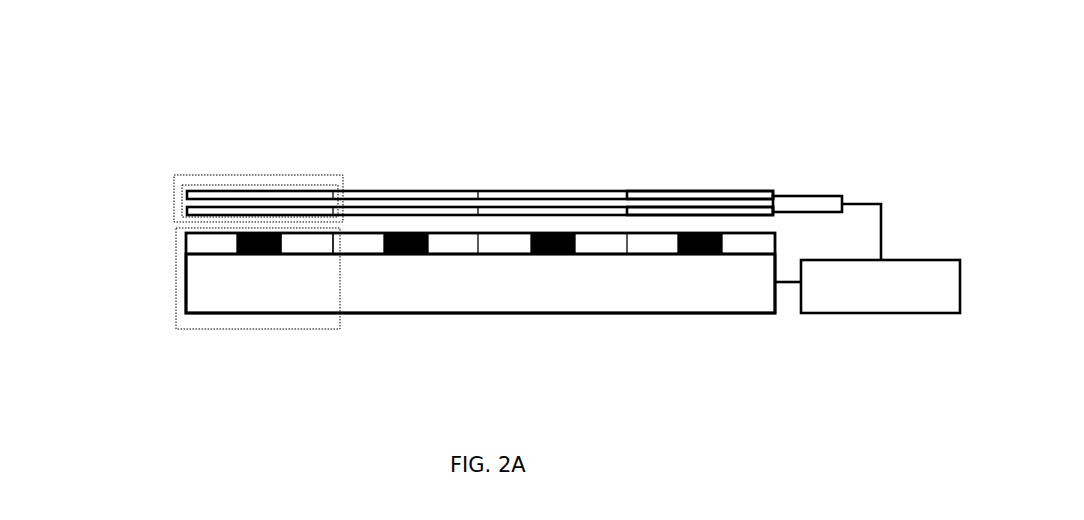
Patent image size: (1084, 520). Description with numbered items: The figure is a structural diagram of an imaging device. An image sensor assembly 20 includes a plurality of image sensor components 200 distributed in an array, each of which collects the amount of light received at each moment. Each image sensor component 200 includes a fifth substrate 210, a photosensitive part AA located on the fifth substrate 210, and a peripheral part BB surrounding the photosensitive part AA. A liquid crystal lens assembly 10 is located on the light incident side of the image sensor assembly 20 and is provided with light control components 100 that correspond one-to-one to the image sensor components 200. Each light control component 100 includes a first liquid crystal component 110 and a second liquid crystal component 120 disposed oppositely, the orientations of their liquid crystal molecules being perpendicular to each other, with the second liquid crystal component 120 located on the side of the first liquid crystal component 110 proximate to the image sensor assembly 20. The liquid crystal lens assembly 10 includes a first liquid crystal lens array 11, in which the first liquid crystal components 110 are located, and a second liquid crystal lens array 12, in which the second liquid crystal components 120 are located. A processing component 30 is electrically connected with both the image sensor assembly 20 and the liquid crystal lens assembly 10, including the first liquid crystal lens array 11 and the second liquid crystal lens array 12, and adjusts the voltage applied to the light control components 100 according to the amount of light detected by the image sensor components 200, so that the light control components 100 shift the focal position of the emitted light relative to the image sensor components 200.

The liquid crystal lens assembly 10 is at (669, 122).
The first liquid crystal lens array 11 is at (700, 145).
The second liquid crystal lens array 12 is at (713, 80).
The image sensor assembly 20 is at (410, 323).
The processing component 30 is at (867, 339).
The light control component 100 is at (174, 185).
The first liquid crystal component 110 is at (186, 193).
The second liquid crystal component 120 is at (186, 213).
The image sensor component 200 is at (176, 282).
The fifth substrate 210 is at (480, 336).
The photosensitive part AA is at (479, 325).
The peripheral part BB is at (454, 325).